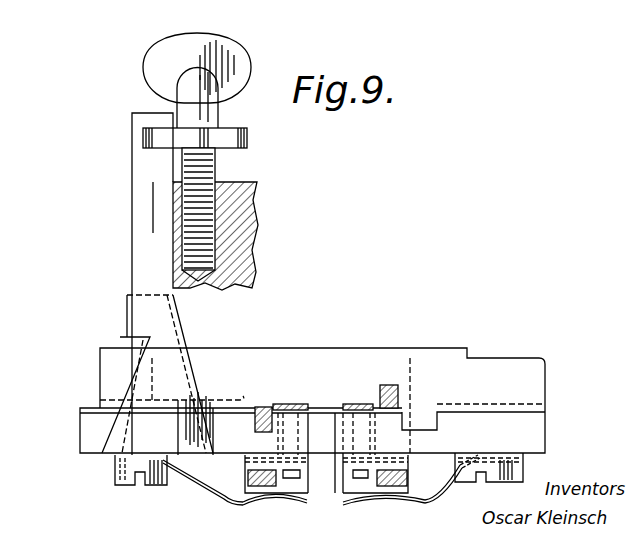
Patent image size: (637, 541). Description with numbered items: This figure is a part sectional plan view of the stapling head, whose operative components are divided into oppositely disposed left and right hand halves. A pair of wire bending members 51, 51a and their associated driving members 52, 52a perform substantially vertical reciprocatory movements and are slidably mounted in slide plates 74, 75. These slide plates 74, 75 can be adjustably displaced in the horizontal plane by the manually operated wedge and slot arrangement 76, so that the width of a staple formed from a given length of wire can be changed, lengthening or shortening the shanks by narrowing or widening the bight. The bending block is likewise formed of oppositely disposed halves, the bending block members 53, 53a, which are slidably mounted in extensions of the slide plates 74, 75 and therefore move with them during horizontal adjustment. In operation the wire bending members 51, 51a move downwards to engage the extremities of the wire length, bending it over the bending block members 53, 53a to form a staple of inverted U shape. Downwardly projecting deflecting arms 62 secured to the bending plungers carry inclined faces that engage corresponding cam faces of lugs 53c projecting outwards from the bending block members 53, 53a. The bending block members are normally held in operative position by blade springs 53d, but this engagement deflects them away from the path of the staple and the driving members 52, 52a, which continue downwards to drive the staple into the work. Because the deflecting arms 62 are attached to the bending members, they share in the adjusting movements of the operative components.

The wedge and slot arrangement 76 is at (164, 202).
The slide plate 75 is at (100, 435).
The slide plate 74 is at (582, 378).
The wire bending member 51 is at (262, 404).
The driving member 52 is at (291, 402).
The driving member 52a is at (355, 402).
The wire bending member 51a is at (392, 384).
The deflecting arm 62 is at (243, 497).
The bending block member 53 is at (300, 500).
The bending block member 53a is at (344, 497).
The lug 53c is at (227, 518).
The blade spring 53d is at (203, 483).